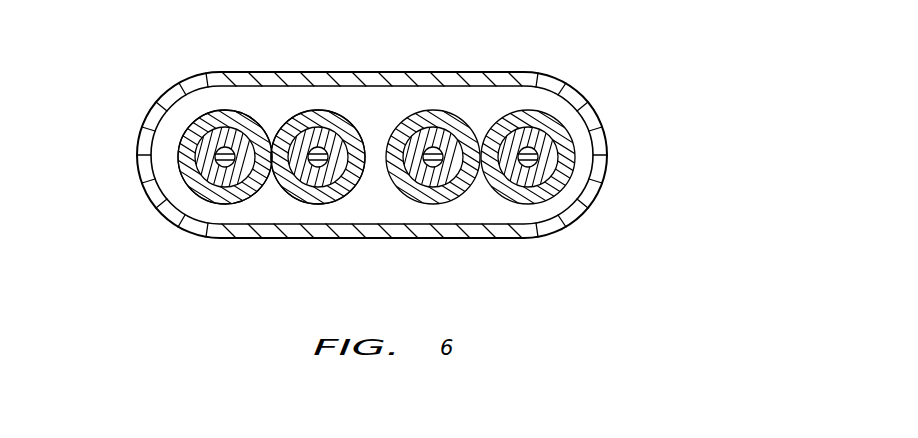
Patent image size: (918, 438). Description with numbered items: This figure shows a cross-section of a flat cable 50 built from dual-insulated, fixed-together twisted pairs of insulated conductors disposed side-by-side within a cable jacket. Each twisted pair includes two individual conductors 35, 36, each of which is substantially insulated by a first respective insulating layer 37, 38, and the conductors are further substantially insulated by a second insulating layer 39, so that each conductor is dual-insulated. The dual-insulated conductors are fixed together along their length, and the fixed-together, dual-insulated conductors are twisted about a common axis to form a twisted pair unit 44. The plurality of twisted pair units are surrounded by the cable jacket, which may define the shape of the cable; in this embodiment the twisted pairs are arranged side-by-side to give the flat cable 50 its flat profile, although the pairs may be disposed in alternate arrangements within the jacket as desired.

The flat cable 50 is at (597, 98).
The twisted pair unit 44 is at (262, 107).
The conductor 35 is at (217, 148).
The conductor 36 is at (318, 148).
The first insulating layer 37 is at (430, 142).
The first insulating layer 38 is at (525, 142).
The second insulating layer 39 is at (192, 180).